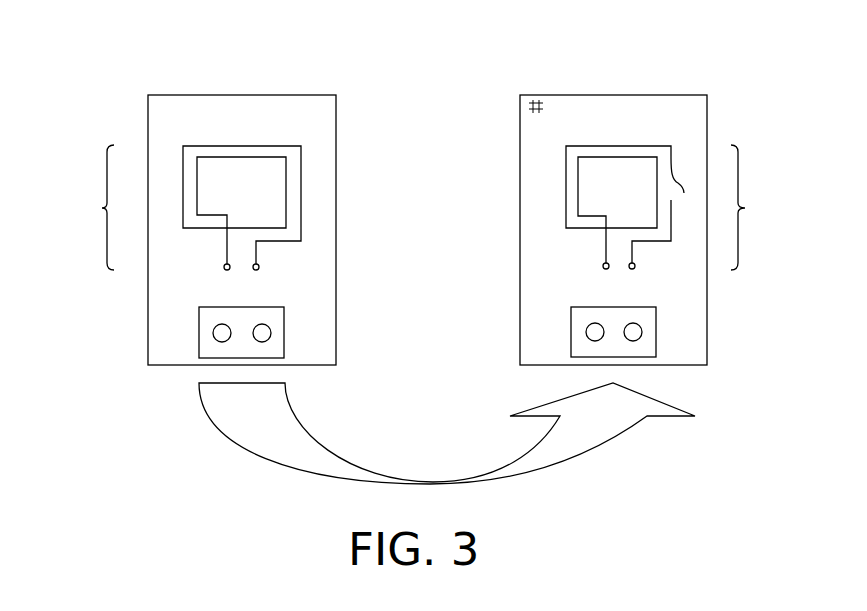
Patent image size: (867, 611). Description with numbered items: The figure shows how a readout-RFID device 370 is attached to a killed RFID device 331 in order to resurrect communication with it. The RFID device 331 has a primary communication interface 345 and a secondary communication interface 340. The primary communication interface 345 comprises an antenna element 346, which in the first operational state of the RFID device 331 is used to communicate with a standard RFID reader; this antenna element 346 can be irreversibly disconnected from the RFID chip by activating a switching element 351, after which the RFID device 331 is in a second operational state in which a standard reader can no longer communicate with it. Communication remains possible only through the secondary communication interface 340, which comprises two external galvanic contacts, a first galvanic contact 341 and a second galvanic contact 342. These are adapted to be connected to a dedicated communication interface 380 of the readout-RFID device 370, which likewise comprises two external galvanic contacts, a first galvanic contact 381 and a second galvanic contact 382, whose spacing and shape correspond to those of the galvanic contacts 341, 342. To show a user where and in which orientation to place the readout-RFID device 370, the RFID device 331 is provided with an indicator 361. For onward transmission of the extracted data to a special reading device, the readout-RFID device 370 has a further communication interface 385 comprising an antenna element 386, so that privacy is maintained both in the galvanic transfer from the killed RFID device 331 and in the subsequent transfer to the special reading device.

The readout-RFID device 370 is at (197, 95).
The antenna element 386 is at (265, 157).
The communication interface 385 is at (86, 207).
The dedicated communication interface 380 is at (199, 343).
The first galvanic contact 381 is at (222, 324).
The second galvanic contact 382 is at (262, 324).
The RFID device 331 is at (588, 95).
The indicator 361 is at (536, 100).
The antenna element 346 is at (637, 157).
The switching element 351 is at (678, 183).
The primary communication interface 345 is at (761, 207).
The secondary communication interface 340 is at (571, 335).
The first galvanic contact 341 is at (595, 323).
The second galvanic contact 342 is at (633, 323).